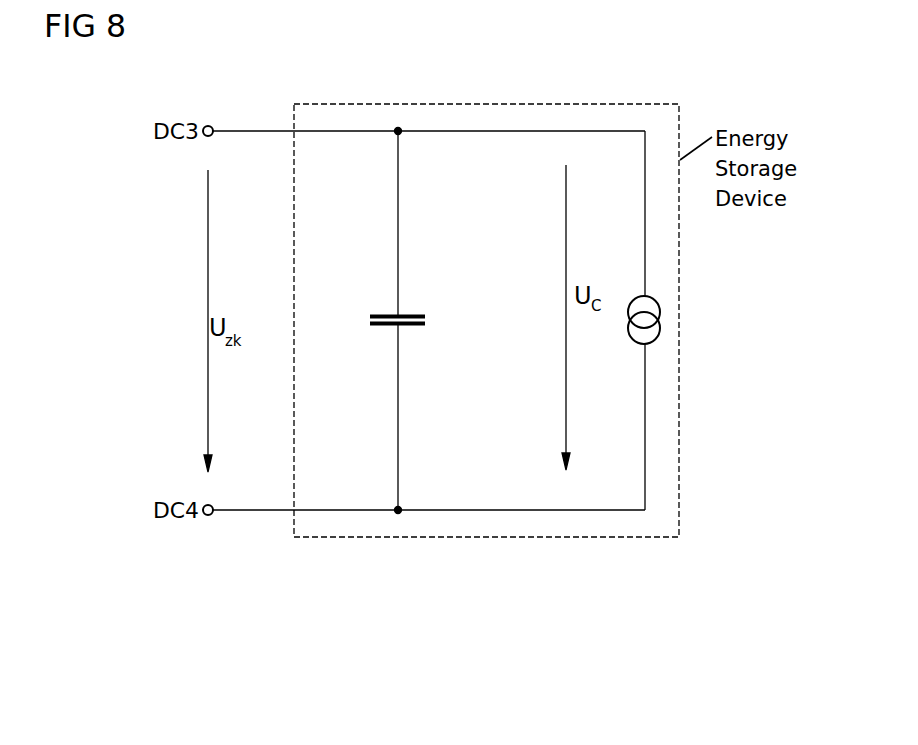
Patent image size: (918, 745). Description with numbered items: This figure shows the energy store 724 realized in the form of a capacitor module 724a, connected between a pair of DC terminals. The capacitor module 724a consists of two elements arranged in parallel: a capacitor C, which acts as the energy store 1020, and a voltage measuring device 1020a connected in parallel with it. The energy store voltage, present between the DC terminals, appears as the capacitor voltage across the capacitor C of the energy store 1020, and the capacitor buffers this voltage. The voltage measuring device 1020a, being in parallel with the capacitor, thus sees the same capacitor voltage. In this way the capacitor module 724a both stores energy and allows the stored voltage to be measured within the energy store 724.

The energy store 724 is at (680, 88).
The capacitor module 724a is at (492, 104).
The capacitor 1020 is at (415, 320).
The voltage measuring device 1020a is at (660, 326).